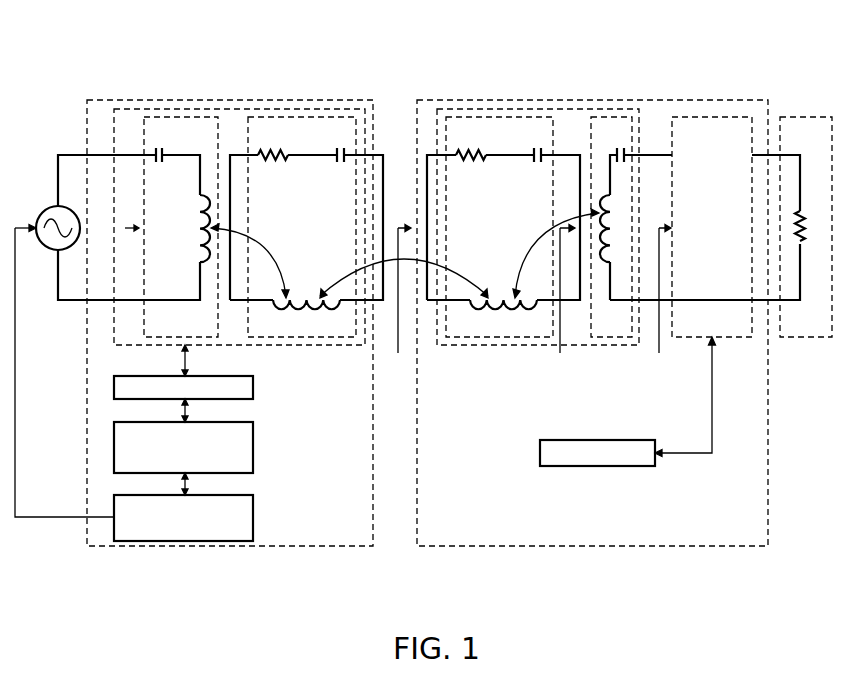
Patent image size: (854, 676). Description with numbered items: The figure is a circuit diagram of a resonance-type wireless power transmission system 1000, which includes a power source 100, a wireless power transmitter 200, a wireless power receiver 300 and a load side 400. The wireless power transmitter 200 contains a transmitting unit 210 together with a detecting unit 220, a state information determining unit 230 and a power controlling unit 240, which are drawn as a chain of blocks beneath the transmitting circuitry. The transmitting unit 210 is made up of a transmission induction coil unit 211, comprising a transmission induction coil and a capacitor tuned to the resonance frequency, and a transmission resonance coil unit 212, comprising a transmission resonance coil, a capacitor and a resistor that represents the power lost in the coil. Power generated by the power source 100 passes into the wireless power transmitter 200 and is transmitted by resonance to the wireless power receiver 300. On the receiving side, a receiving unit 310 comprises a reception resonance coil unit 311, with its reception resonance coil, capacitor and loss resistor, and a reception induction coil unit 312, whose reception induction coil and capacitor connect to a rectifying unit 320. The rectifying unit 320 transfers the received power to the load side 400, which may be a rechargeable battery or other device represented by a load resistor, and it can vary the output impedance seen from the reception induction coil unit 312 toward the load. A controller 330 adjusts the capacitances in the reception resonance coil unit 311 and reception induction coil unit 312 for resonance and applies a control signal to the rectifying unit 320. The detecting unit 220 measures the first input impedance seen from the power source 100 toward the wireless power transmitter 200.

The wireless power transmission system 1000 is at (123, 32).
The power source 100 is at (41, 216).
The wireless power transmitter 200 is at (150, 100).
The transmitting unit 210 is at (234, 109).
The transmission induction coil unit 211 is at (183, 109).
The transmission resonance coil unit 212 is at (305, 117).
The detecting unit 220 is at (253, 388).
The state information determining unit 230 is at (253, 446).
The power controlling unit 240 is at (253, 522).
The wireless power receiver 300 is at (462, 100).
The receiving unit 310 is at (538, 109).
The reception resonance coil unit 311 is at (496, 109).
The reception induction coil unit 312 is at (612, 117).
The rectifying unit 320 is at (712, 117).
The controller 330 is at (540, 453).
The load side 400 is at (806, 117).